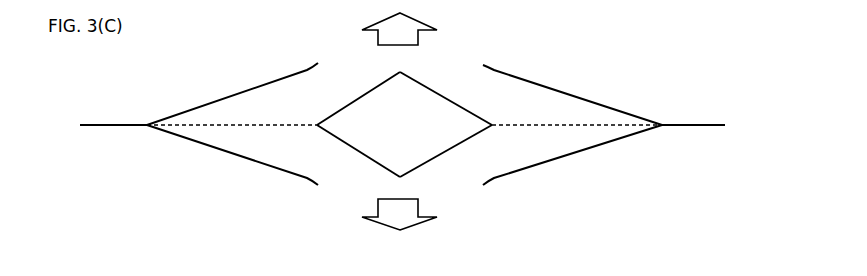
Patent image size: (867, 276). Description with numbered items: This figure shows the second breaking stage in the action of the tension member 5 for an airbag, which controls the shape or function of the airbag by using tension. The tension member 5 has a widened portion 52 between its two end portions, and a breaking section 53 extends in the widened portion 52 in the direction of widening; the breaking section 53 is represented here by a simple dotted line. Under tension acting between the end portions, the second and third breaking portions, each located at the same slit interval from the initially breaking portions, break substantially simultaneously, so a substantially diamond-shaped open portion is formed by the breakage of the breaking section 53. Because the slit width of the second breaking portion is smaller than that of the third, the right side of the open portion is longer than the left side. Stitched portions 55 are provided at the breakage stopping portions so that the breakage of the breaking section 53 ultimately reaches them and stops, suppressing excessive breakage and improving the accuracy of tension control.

The tension member for an airbag 5 is at (402, 124).
The widened portion 52 is at (251, 88).
The stitched portions 55 is at (112, 122).
The breaking section 53 is at (266, 134).